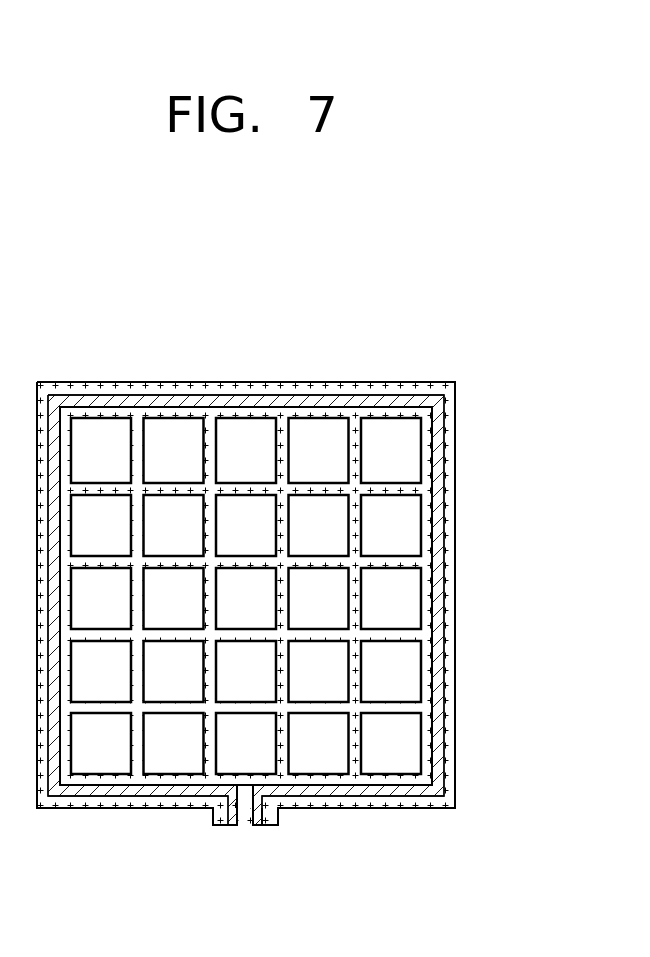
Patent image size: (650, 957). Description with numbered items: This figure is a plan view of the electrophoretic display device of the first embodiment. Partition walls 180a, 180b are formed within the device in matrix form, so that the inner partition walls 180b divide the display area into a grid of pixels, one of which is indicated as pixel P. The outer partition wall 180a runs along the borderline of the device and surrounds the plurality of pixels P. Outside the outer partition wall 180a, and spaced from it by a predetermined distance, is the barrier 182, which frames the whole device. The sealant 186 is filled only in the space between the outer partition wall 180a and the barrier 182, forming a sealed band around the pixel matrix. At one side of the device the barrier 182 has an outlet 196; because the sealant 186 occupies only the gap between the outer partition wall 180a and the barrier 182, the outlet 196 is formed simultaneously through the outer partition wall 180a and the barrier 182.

The outer partition wall 180a is at (425, 503).
The partition wall 180b is at (355, 602).
The barrier 182 is at (453, 568).
The sealant 186 is at (440, 537).
The outlet 196 is at (246, 826).
The pixel P is at (251, 424).